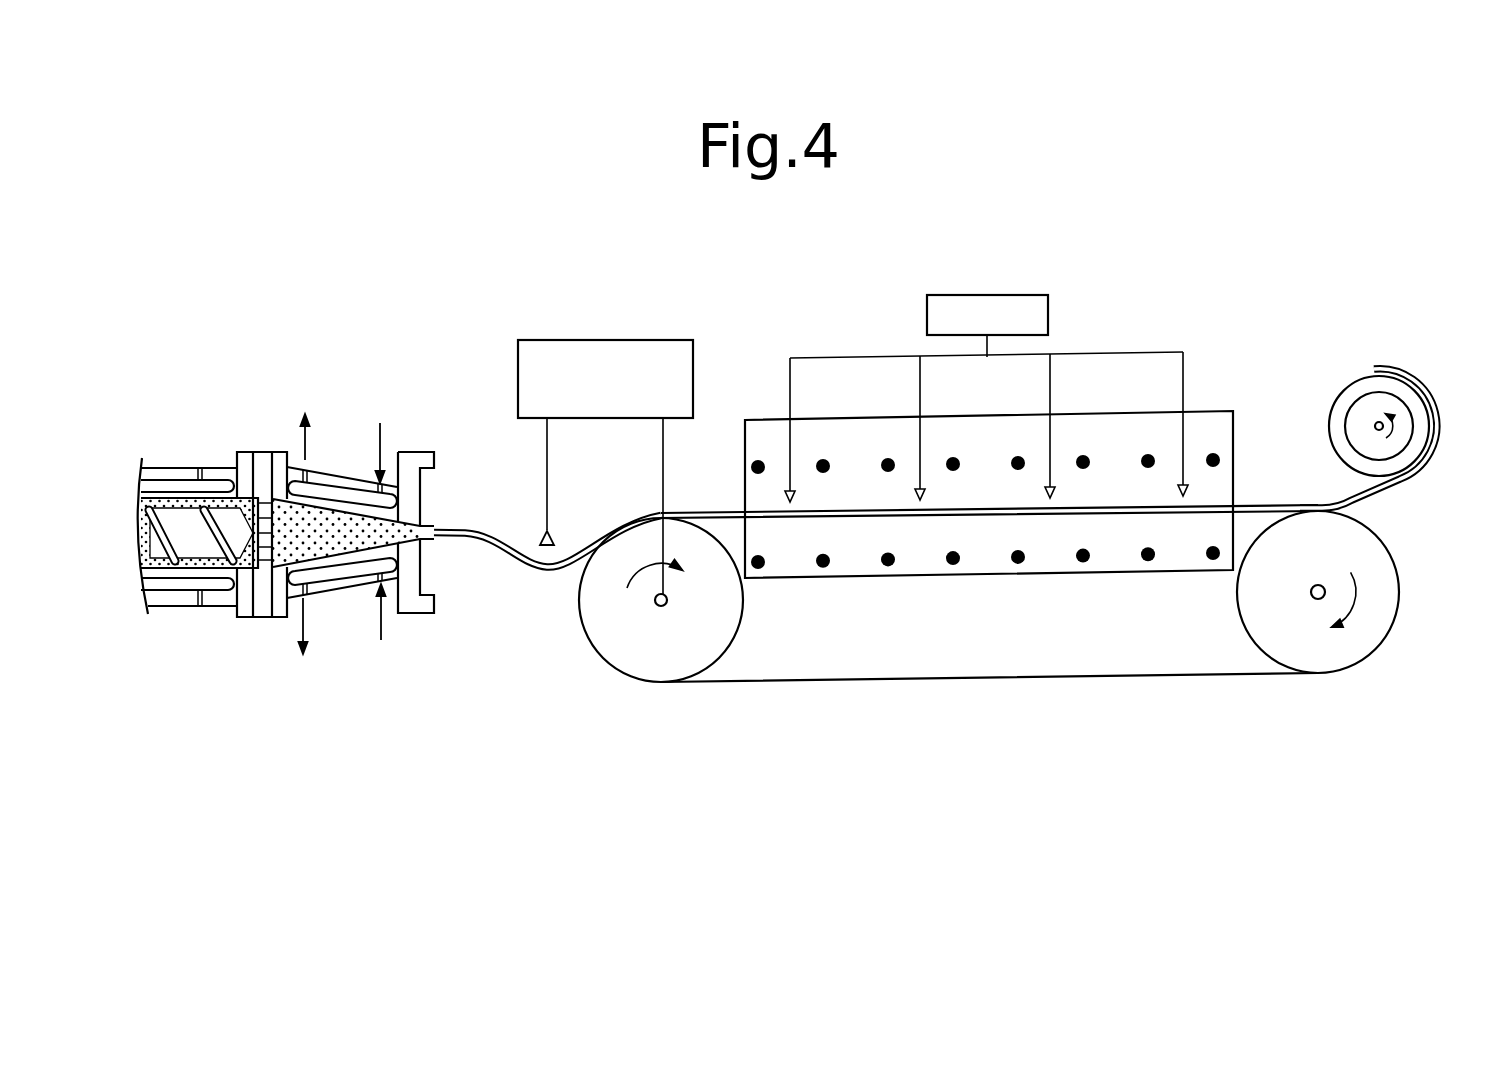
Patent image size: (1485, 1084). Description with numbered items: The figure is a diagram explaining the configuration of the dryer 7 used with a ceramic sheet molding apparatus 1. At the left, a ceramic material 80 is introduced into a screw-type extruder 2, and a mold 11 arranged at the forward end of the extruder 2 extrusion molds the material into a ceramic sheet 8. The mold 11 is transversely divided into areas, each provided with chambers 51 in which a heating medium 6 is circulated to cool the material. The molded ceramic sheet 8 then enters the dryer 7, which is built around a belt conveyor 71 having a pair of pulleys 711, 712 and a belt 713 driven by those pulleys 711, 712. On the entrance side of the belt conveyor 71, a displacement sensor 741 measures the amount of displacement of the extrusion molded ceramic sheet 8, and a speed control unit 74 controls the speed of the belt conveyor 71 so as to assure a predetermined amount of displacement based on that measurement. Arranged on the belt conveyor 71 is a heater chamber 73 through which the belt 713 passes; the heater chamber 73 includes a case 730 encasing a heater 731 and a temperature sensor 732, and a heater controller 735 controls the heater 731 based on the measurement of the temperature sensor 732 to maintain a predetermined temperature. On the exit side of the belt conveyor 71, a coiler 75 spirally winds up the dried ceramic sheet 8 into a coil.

The ceramic sheet molding apparatus 1 is at (203, 375).
The screw-type extruder 2 is at (165, 462).
The ceramic material 80 is at (283, 452).
The mold 11 is at (331, 464).
The heating medium 6 is at (382, 433).
The chambers 51 is at (348, 484).
The ceramic sheet 8 is at (505, 556).
The dryer 7 is at (1118, 312).
The belt conveyor 71 is at (1380, 525).
The pulley 711 is at (640, 660).
The pulley 712 is at (1333, 654).
The belt 713 is at (1092, 678).
The speed control unit 74 is at (652, 348).
The displacement sensor 741 is at (553, 533).
The heater chamber 73 is at (1228, 405).
The case 730 is at (760, 420).
The heater 731 is at (888, 458).
The temperature sensor 732 is at (790, 502).
The heater controller 735 is at (1003, 307).
The coiler 75 is at (1383, 407).